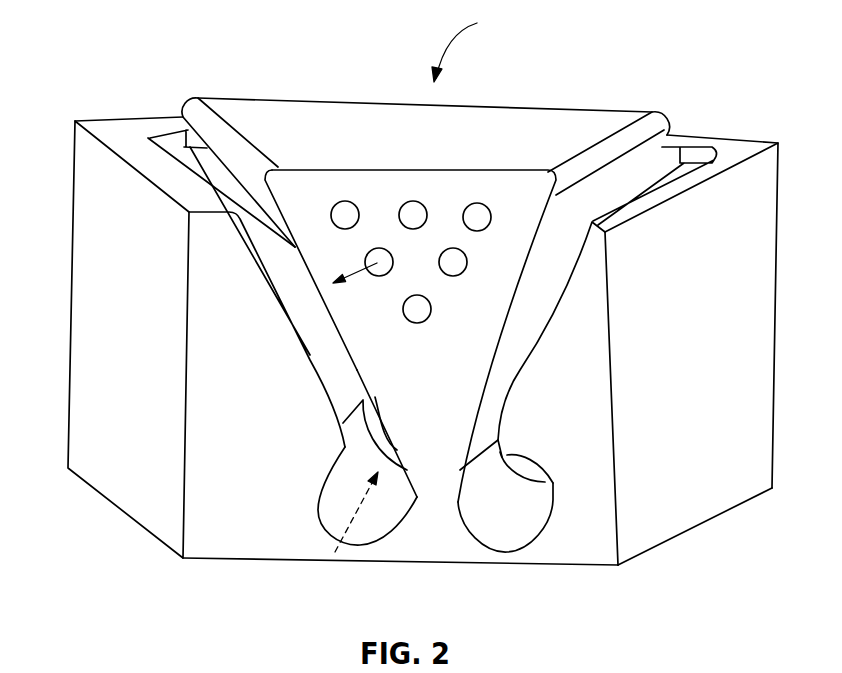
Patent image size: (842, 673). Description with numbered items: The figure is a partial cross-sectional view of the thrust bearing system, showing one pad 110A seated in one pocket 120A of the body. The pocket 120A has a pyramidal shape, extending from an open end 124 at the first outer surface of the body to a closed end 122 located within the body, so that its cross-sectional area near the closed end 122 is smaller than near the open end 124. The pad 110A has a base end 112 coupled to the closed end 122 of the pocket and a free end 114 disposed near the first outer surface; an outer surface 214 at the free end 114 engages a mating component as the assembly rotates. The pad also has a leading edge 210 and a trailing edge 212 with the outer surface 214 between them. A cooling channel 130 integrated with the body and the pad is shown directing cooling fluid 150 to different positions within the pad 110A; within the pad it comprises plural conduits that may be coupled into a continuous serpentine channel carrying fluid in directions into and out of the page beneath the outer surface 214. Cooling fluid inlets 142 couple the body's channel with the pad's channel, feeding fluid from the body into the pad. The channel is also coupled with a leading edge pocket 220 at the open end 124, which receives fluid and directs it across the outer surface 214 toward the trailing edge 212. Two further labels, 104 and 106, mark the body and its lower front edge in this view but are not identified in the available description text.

The die block body 104 is at (767, 140).
The bottom edge of die block 106 is at (620, 568).
The pad 110A is at (292, 156).
The base end 112 is at (415, 545).
The free end 114 is at (477, 44).
The pocket 120A is at (283, 305).
The closed end 122 is at (463, 466).
The open end 124 is at (685, 156).
The cooling channel 130 is at (343, 210).
The cooling fluid inlets 142 is at (387, 512).
The cooling fluid 150 is at (360, 503).
The leading edge 210 is at (197, 100).
The trailing edge 212 is at (660, 122).
The outer surface 214 is at (515, 113).
The leading edge pocket 220 is at (150, 136).